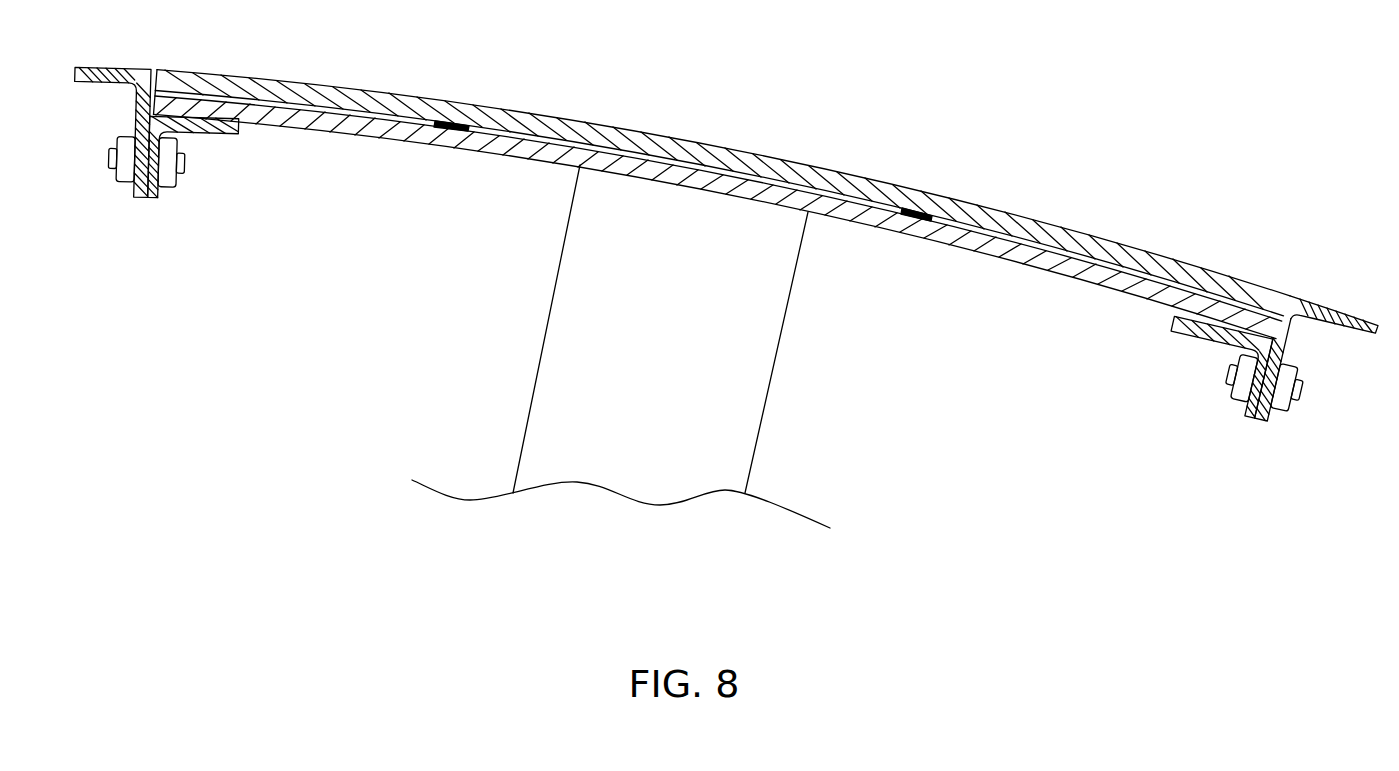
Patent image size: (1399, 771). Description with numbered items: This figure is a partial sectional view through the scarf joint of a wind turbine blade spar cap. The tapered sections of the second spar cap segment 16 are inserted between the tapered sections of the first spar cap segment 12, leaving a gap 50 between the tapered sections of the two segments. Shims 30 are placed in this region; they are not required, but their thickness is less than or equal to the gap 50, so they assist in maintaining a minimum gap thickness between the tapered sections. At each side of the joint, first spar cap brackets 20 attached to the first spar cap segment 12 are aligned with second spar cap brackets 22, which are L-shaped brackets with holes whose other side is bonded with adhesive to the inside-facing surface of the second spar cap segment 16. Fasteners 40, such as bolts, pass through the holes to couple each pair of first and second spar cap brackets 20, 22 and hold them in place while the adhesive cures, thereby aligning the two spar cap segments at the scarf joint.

The first spar cap segment 12 is at (610, 137).
The second spar cap segment 16 is at (885, 222).
The gap 50 is at (750, 178).
The shims 30 is at (455, 120).
The first spar cap brackets 20 is at (138, 197).
The second spar cap brackets 22 is at (235, 132).
The fasteners 40 is at (170, 187).